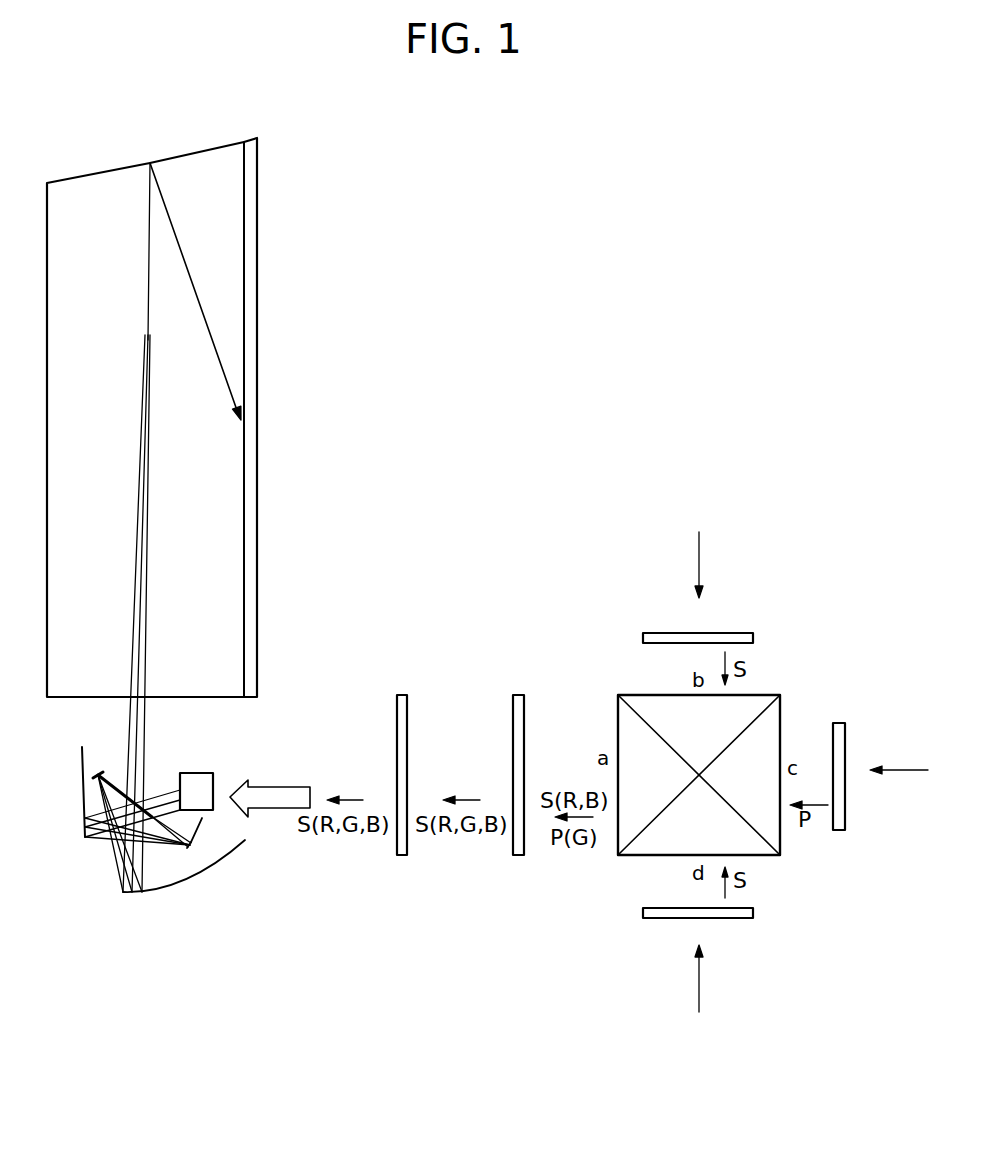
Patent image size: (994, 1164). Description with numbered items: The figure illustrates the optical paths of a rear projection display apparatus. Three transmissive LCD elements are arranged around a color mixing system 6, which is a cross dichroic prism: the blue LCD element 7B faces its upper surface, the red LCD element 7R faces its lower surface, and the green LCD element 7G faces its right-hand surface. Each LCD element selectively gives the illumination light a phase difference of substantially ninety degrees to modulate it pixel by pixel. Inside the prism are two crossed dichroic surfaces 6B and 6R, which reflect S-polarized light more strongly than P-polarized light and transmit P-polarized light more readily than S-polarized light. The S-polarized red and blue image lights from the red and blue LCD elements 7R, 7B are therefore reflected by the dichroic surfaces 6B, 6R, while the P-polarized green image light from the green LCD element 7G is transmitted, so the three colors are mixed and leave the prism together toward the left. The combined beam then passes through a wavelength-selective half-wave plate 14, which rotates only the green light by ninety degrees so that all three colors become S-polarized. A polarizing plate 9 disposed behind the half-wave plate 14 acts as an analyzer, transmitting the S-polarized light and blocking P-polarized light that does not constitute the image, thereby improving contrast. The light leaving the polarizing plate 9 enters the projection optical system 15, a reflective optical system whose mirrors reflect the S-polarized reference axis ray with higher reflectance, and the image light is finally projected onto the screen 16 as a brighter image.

The color mixing system 6 is at (712, 751).
The dichroic surface 6B is at (726, 748).
The dichroic surface 6R is at (721, 798).
The blue LCD element 7B is at (752, 632).
The green LCD element 7G is at (845, 736).
The red LCD element 7R is at (745, 919).
The polarizing plate 9 is at (402, 856).
The wavelength-selective half-wave plate 14 is at (519, 856).
The projection optical system 15 is at (97, 848).
The screen 16 is at (258, 492).